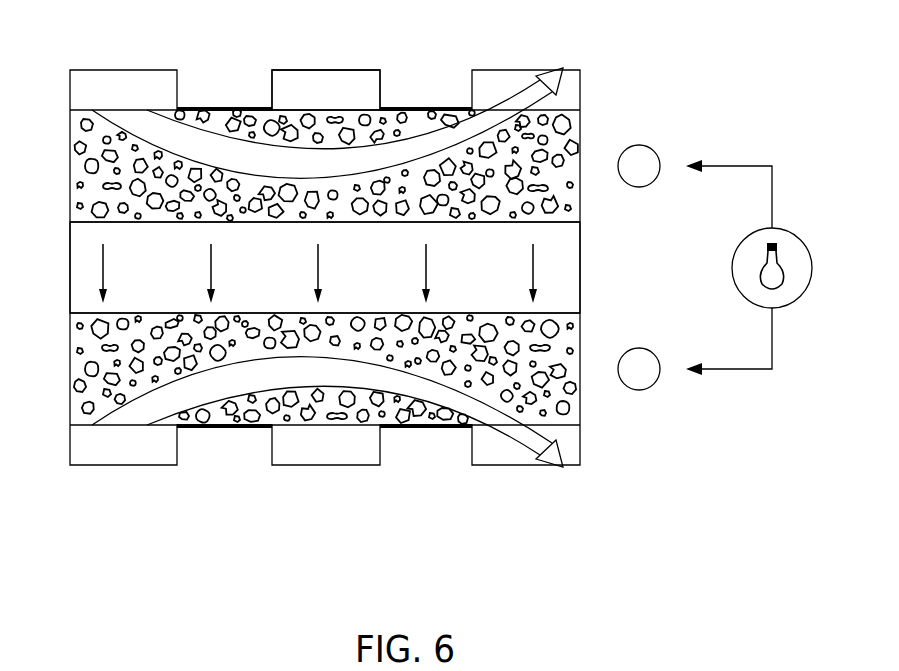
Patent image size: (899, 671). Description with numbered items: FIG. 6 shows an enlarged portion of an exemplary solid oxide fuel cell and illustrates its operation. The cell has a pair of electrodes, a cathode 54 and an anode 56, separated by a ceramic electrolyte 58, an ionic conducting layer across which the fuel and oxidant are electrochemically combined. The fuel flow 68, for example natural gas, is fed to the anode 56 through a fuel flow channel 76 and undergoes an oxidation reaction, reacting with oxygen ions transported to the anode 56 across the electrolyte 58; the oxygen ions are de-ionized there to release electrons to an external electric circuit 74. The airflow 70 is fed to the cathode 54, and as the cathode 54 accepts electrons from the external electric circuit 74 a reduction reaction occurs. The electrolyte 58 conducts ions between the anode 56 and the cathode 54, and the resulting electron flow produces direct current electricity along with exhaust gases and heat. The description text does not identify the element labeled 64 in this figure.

The cathode 54 is at (70, 166).
The anode 56 is at (70, 370).
The ceramic electrolyte 58 is at (70, 268).
The current collector tab 64 is at (325, 70).
The fuel flow 68 is at (122, 422).
The airflow 70 is at (122, 113).
The external electric circuit 74 is at (790, 302).
The fuel flow channel 76 is at (425, 108).